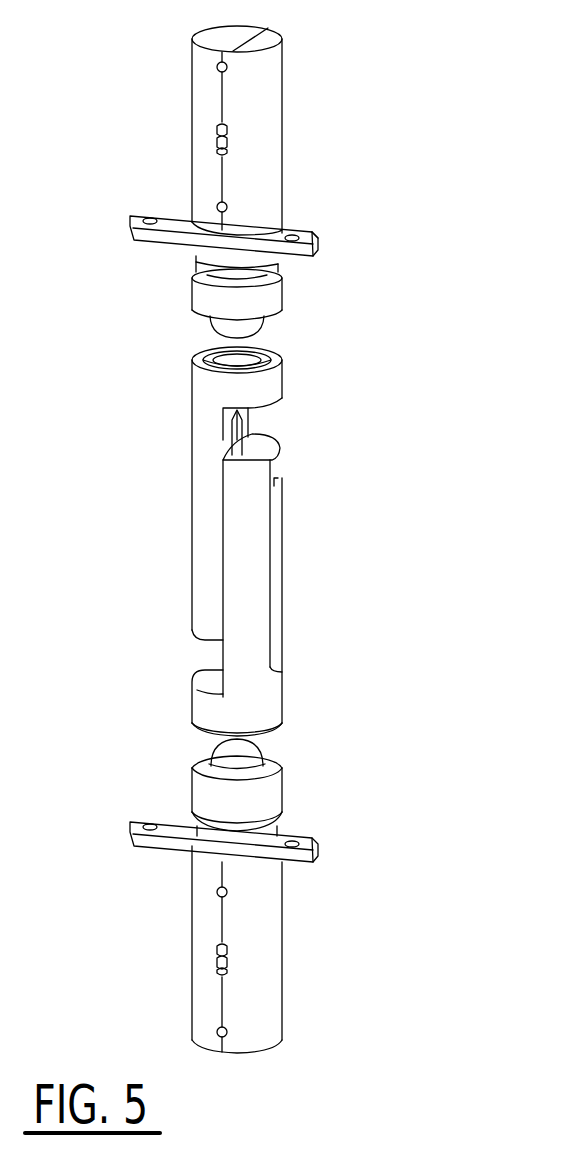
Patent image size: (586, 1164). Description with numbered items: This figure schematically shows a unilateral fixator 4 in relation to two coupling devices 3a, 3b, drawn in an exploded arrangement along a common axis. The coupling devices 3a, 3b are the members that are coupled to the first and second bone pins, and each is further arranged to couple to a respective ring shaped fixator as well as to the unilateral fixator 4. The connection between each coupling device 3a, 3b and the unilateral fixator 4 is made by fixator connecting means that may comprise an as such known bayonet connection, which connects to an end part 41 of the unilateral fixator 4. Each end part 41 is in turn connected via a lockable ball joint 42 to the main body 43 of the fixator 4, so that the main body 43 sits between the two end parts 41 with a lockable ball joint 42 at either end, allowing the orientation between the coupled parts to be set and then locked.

The coupling device 3a is at (365, 146).
The coupling device 3b is at (263, 988).
The unilateral fixator 4 is at (435, 543).
The end part 41 is at (257, 295).
The lockable ball joint 42 is at (258, 325).
The main body 43 is at (243, 572).